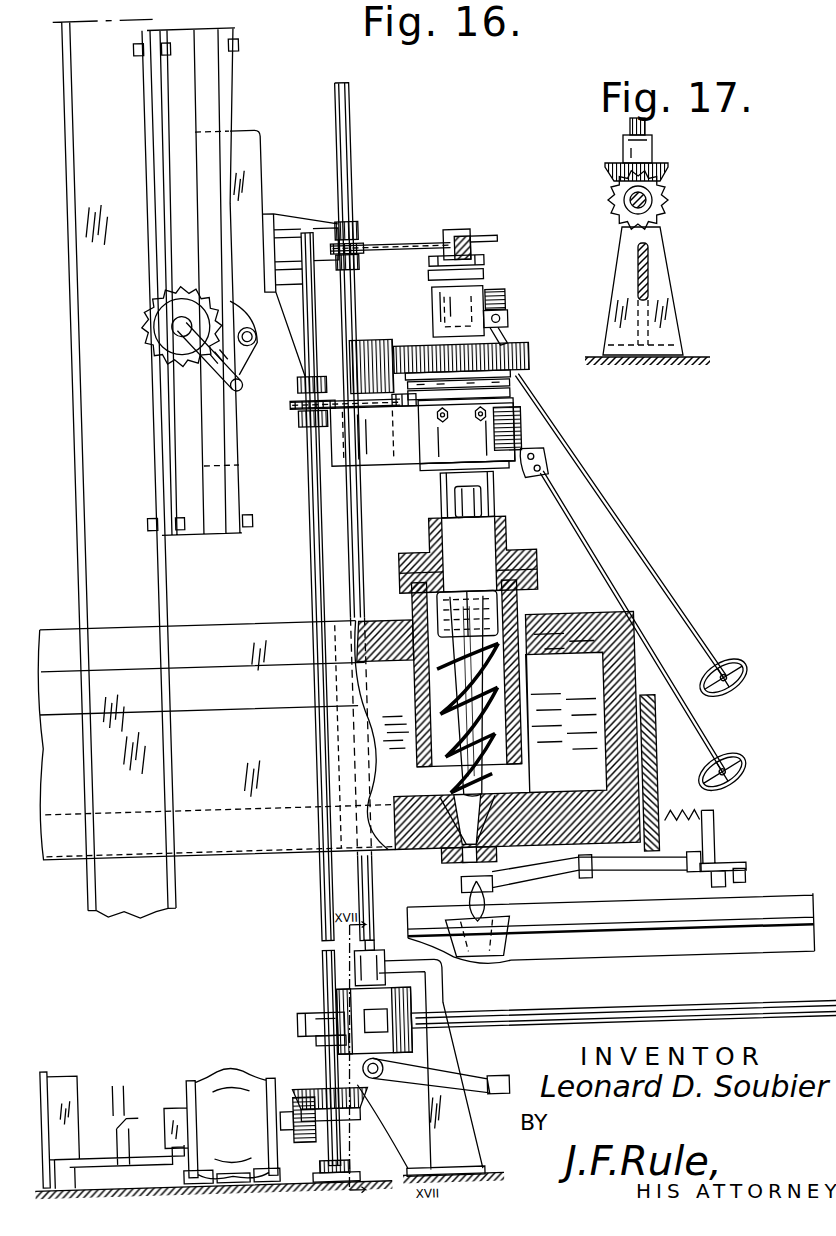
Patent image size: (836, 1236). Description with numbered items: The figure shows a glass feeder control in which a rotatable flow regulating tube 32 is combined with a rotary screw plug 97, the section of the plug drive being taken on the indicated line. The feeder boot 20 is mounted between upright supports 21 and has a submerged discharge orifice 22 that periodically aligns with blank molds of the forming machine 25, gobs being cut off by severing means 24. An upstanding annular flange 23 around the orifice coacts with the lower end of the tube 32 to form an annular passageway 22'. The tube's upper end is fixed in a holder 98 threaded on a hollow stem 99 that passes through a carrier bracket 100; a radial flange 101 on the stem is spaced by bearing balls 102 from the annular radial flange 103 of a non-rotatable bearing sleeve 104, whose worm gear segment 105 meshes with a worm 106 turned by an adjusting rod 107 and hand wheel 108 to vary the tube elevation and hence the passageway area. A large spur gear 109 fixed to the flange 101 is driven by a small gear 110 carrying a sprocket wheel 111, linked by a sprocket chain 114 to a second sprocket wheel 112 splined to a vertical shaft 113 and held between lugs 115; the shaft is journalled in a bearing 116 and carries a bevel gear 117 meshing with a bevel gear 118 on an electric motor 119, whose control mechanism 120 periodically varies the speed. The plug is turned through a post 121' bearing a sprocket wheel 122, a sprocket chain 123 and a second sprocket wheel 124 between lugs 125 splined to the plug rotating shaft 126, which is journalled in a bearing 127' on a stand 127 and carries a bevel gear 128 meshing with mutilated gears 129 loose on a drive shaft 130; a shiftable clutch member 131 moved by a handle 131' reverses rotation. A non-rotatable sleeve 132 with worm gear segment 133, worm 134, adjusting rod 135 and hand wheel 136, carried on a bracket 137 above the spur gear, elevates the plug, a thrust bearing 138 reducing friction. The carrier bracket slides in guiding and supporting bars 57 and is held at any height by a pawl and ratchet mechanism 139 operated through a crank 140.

In FIG. 16, the feeder boot 20 is at (244, 856).
In FIG. 16, the upright supports 21 is at (104, 578).
In FIG. 16, the discharge orifice 22 is at (448, 810).
In FIG. 16, the annular passageway 22' is at (493, 695).
In FIG. 16, the annular flange 23 is at (510, 800).
In FIG. 16, the severing means 24 is at (560, 878).
In FIG. 16, the forming machine 25 is at (690, 960).
In FIG. 16, the flow regulating tube 32 is at (409, 600).
In FIG. 16, the guiding and supporting bars 57 is at (230, 34).
In FIG. 16, the rotary screw plug 97 is at (496, 690).
In FIG. 16, the holder 98 is at (535, 574).
In FIG. 16, the hollow stem 99 is at (495, 516).
In FIG. 16, the carrier bracket 100 is at (406, 466).
In FIG. 16, the radial flange 101 is at (515, 379).
In FIG. 16, the bearing balls 102 is at (514, 388).
In FIG. 16, the annular radial flange 103 is at (514, 398).
In FIG. 16, the bearing sleeve 104 is at (506, 474).
In FIG. 16, the worm gear segment 105 is at (496, 442).
In FIG. 16, the worm 106 is at (546, 462).
In FIG. 16, the adjusting rod 107 is at (570, 524).
In FIG. 16, the hand wheel 108 is at (742, 778).
In FIG. 16, the spur gear 109 is at (534, 355).
In FIG. 16, the gear 110 is at (380, 342).
In FIG. 16, the sprocket wheel 111 is at (408, 408).
In FIG. 16, the second sprocket wheel 112 is at (293, 404).
In FIG. 16, the vertical shaft 113 is at (309, 497).
In FIG. 16, the sprocket chain 114 is at (378, 410).
In FIG. 16, the lugs 115 is at (301, 380).
In FIG. 16, the bearing 116 is at (332, 1166).
In FIG. 16, the bevel gear 117 is at (330, 1110).
In FIG. 16, the bevel gear 118 is at (292, 1141).
In FIG. 16, the electric motor 119 is at (209, 1078).
In FIG. 16, the control mechanism 120 is at (495, 612).
In FIG. 16, the post 121' is at (430, 503).
In FIG. 16, the sprocket wheel 122 is at (480, 240).
In FIG. 16, the sprocket chain 123 is at (432, 246).
In FIG. 16, the second sprocket wheel 124 is at (366, 257).
In FIG. 16, the lugs 125 is at (368, 232).
In FIG. 16, the plug rotating shaft 126 is at (362, 176).
In FIG. 16, the stand 127 is at (434, 1067).
In FIG. 17, the stand 127 is at (659, 291).
In FIG. 16, the bearing 127' is at (380, 958).
In FIG. 17, the bearing 127' is at (669, 140).
In FIG. 16, the bevel gear 128 is at (322, 996).
In FIG. 17, the bevel gear 128 is at (662, 174).
In FIG. 16, the mutilated gears 129 is at (396, 1020).
In FIG. 17, the mutilated gears 129 is at (655, 202).
In FIG. 16, the drive shaft 130 is at (528, 1015).
In FIG. 16, the shiftable clutch member 131 is at (298, 1045).
In FIG. 16, the handle 131' is at (439, 1074).
In FIG. 16, the non-rotatable sleeve 132 is at (491, 279).
In FIG. 16, the worm gear segment 133 is at (513, 323).
In FIG. 16, the worm 134 is at (511, 305).
In FIG. 16, the adjusting rod 135 is at (594, 470).
In FIG. 16, the hand wheel 136 is at (746, 686).
In FIG. 16, the bracket 137 is at (438, 302).
In FIG. 16, the thrust bearing 138 is at (492, 266).
In FIG. 16, the pawl and ratchet mechanism 139 is at (150, 336).
In FIG. 16, the crank 140 is at (218, 372).